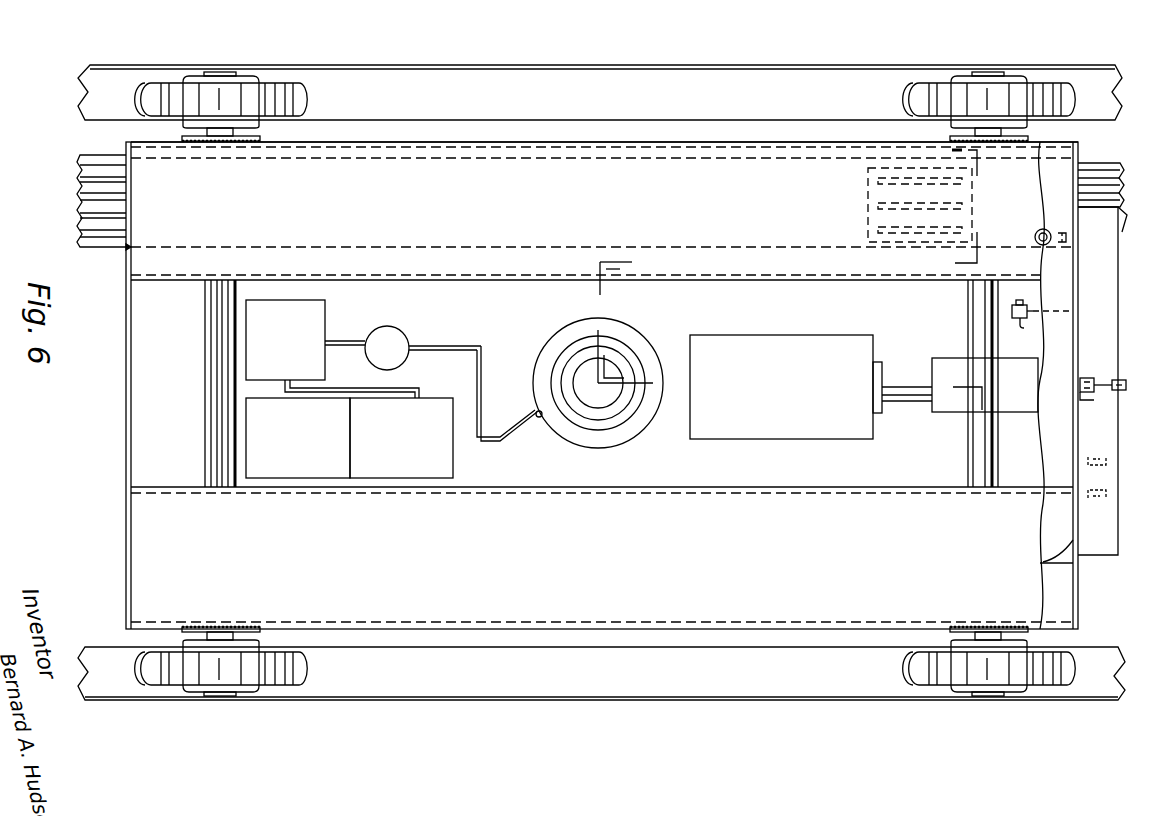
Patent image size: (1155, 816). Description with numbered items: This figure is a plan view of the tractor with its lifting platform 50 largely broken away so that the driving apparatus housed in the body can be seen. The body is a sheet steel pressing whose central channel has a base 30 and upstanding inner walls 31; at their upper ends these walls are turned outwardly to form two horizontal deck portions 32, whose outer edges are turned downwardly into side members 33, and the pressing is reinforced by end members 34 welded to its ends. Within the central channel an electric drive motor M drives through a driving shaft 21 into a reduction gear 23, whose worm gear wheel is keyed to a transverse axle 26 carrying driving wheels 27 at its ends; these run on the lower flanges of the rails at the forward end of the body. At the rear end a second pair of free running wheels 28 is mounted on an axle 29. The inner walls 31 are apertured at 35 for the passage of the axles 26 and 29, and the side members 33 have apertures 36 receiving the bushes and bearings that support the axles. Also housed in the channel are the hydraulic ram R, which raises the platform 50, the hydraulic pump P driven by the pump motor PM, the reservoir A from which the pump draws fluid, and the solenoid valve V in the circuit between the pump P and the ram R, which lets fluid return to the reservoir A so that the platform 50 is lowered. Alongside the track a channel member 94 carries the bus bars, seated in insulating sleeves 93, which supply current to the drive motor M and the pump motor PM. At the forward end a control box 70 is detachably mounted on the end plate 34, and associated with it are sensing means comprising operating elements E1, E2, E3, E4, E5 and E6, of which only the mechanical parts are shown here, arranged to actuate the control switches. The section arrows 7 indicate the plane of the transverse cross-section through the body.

The section line 7- 7 is at (817, 147).
The driving shaft 21 is at (900, 385).
The reduction gear 23 is at (985, 385).
The axle 26 is at (1005, 438).
The driving wheels 27 is at (1066, 103).
The free running wheels 28 is at (292, 98).
The axle 29 is at (210, 408).
The base 30 is at (491, 308).
The inner walls 31 is at (668, 282).
The deck portions 32 is at (602, 384).
The side members 33 is at (495, 145).
The end members 34 is at (126, 547).
The apertures 35 is at (238, 281).
The apertures 36 is at (258, 142).
The lifting platform 50 is at (1050, 520).
The control box 70 is at (1100, 556).
The insulating sleeves 93 is at (127, 250).
The channel member 94 is at (92, 248).
The operating element E1 is at (1104, 375).
The operating element E2 is at (1026, 330).
The operating element E3 is at (1094, 498).
The operating element E4 is at (1060, 232).
The operating element E5 is at (1090, 455).
The operating element E6 is at (1053, 208).
The hydraulic ram R is at (620, 412).
The reservoir A is at (332, 349).
The solenoid valve V is at (453, 383).
The pump motor PM is at (298, 438).
The hydraulic pump P is at (401, 438).
The electric drive motor M is at (781, 387).